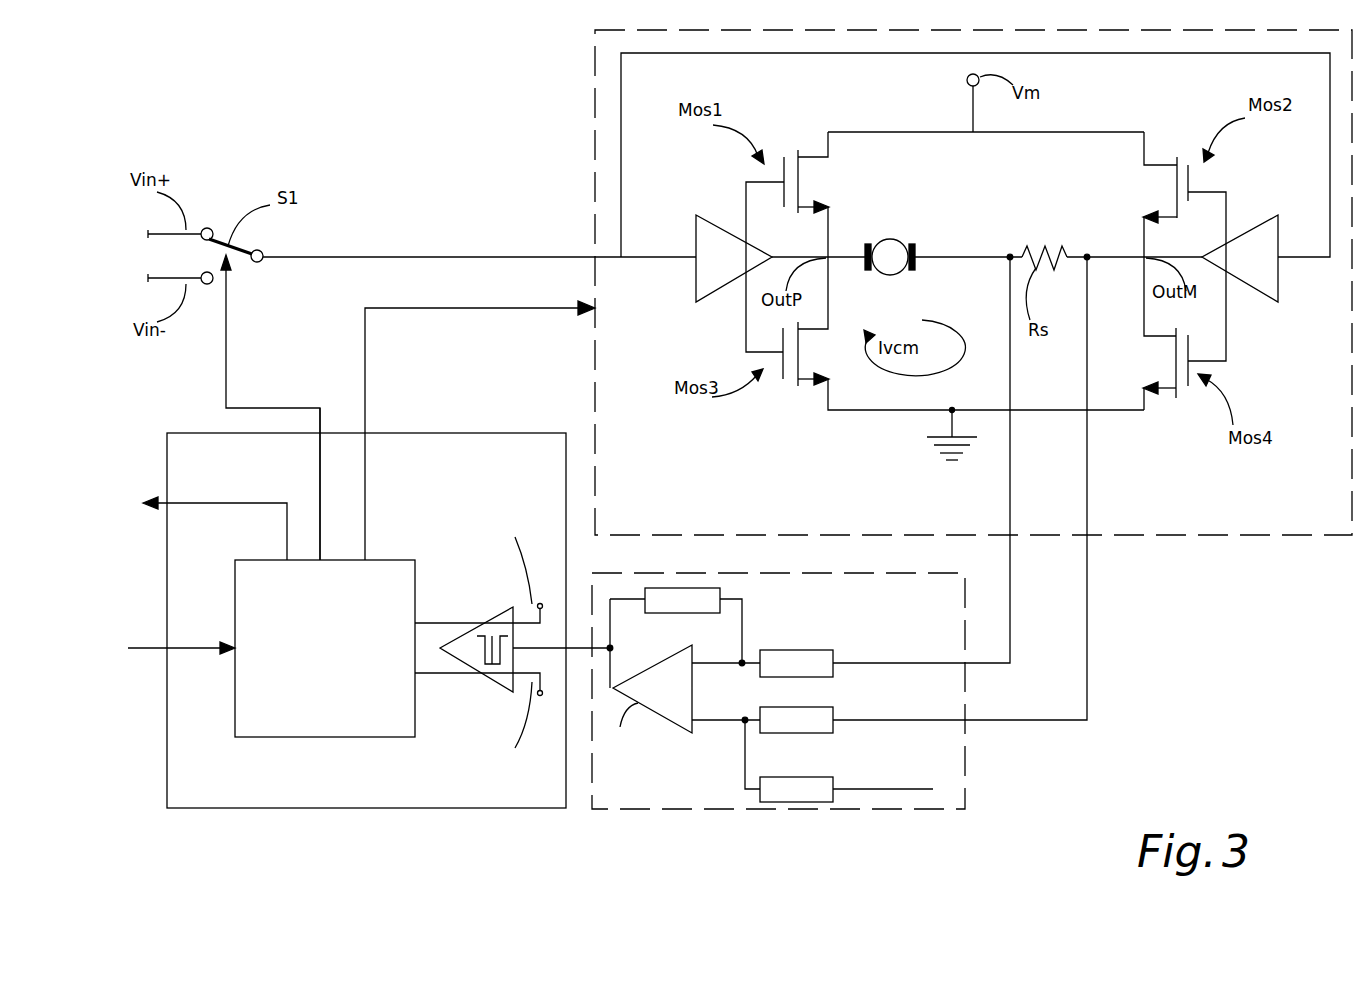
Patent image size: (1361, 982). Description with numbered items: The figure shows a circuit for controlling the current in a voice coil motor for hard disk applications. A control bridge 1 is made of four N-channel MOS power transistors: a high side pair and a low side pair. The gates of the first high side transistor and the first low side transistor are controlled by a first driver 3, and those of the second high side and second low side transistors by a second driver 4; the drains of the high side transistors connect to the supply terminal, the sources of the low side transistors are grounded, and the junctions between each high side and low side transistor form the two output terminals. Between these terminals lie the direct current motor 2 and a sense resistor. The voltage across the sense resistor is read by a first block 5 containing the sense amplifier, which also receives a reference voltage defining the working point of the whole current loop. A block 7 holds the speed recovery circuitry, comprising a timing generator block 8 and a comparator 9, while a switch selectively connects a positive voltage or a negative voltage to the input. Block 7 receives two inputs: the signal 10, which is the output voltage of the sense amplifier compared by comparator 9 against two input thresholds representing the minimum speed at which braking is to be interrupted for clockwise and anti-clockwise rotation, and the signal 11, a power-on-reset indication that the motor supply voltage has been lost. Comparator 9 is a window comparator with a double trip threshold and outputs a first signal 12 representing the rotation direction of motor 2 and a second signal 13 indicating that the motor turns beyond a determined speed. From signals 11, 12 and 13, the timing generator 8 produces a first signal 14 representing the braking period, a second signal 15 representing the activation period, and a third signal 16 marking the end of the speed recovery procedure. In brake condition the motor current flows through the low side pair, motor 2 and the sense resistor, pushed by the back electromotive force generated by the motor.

The control bridge 1 is at (1165, 538).
The direct current motor 2 is at (898, 268).
The first driver 3 is at (724, 268).
The second driver 4 is at (1258, 268).
The first block 5 is at (968, 734).
The speed recovery circuitry block 7 is at (445, 432).
The timing generator block 8 is at (327, 660).
The comparator 9 is at (497, 688).
The input signal 10 is at (580, 649).
The input signal 11 is at (148, 647).
The first signal 12 is at (433, 622).
The second signal 13 is at (433, 675).
The first signal 14 is at (365, 500).
The second signal 15 is at (320, 524).
The third signal 16 is at (208, 500).